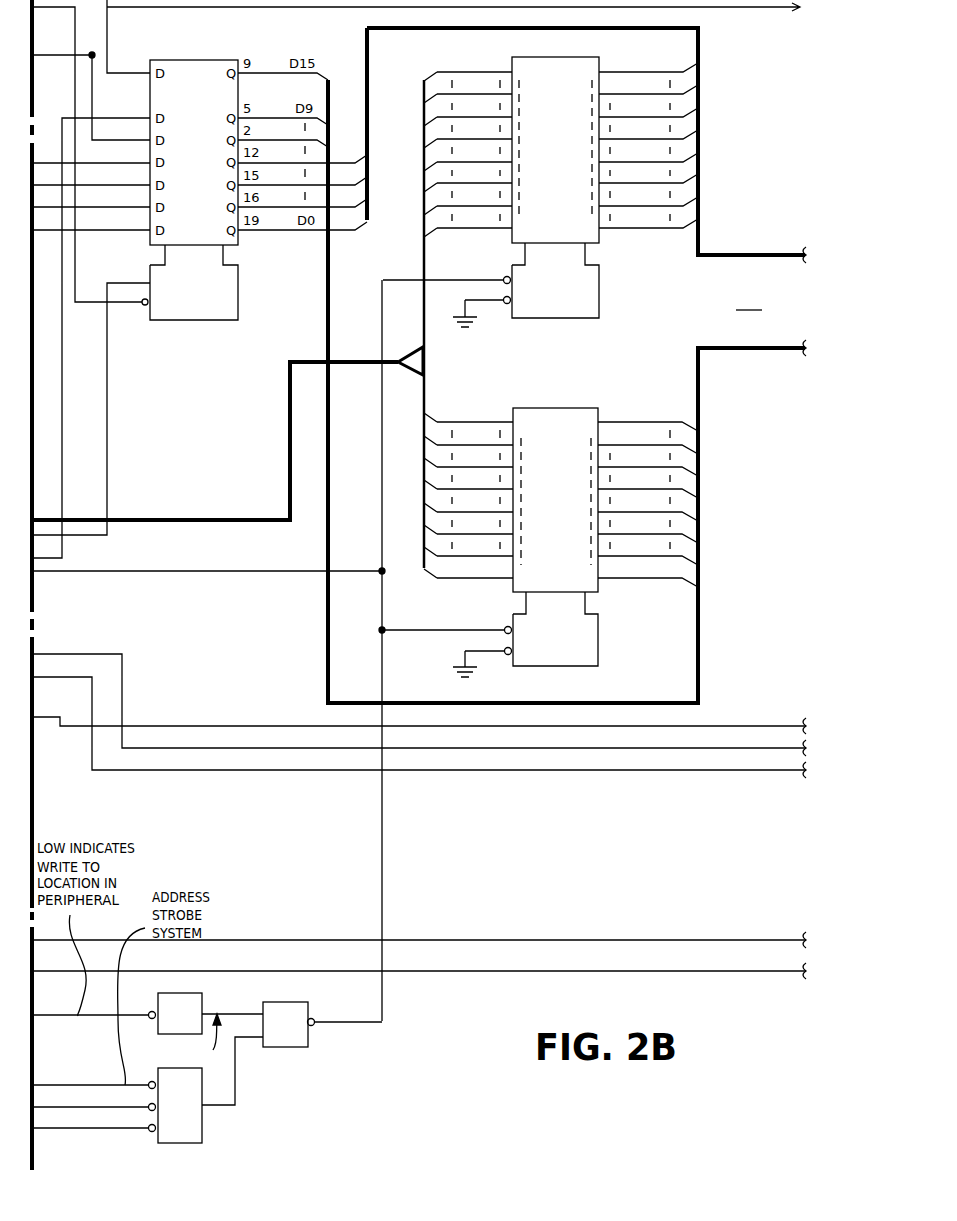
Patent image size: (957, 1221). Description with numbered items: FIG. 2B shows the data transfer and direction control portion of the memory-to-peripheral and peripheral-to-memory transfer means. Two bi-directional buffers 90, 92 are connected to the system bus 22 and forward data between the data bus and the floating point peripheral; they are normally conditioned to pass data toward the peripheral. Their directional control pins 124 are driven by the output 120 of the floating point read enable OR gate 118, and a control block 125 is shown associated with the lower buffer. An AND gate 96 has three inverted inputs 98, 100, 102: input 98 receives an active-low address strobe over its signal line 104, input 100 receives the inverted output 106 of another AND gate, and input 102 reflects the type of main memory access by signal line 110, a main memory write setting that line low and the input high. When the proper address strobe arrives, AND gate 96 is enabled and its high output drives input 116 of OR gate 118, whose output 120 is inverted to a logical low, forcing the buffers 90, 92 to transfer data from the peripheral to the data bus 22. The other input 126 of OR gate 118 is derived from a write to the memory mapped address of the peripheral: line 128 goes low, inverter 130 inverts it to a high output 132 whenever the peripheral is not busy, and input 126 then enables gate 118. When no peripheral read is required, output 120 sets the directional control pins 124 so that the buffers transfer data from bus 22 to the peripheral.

The system bus 22 is at (567, 365).
The bi-directional buffer 90 is at (556, 408).
The bi-directional buffer 92 is at (555, 57).
The AND gate 96 is at (202, 1131).
The inverted input 98 is at (150, 1082).
The inverted input 100 is at (146, 1110).
The inverted input 102 is at (152, 1134).
The address strobe line 104 is at (114, 1085).
The inverted output 106 is at (84, 1108).
The signal line 110 is at (74, 1130).
The input 116 is at (232, 1085).
The floating point read enable OR gate 118 is at (310, 1007).
The output 120 is at (243, 573).
The directional control pins 124 is at (505, 276).
The buffer control block 125 is at (598, 645).
The input 126 is at (232, 1013).
The line 128 is at (44, 1016).
The inverter 130 is at (200, 995).
The output 132 is at (213, 1050).